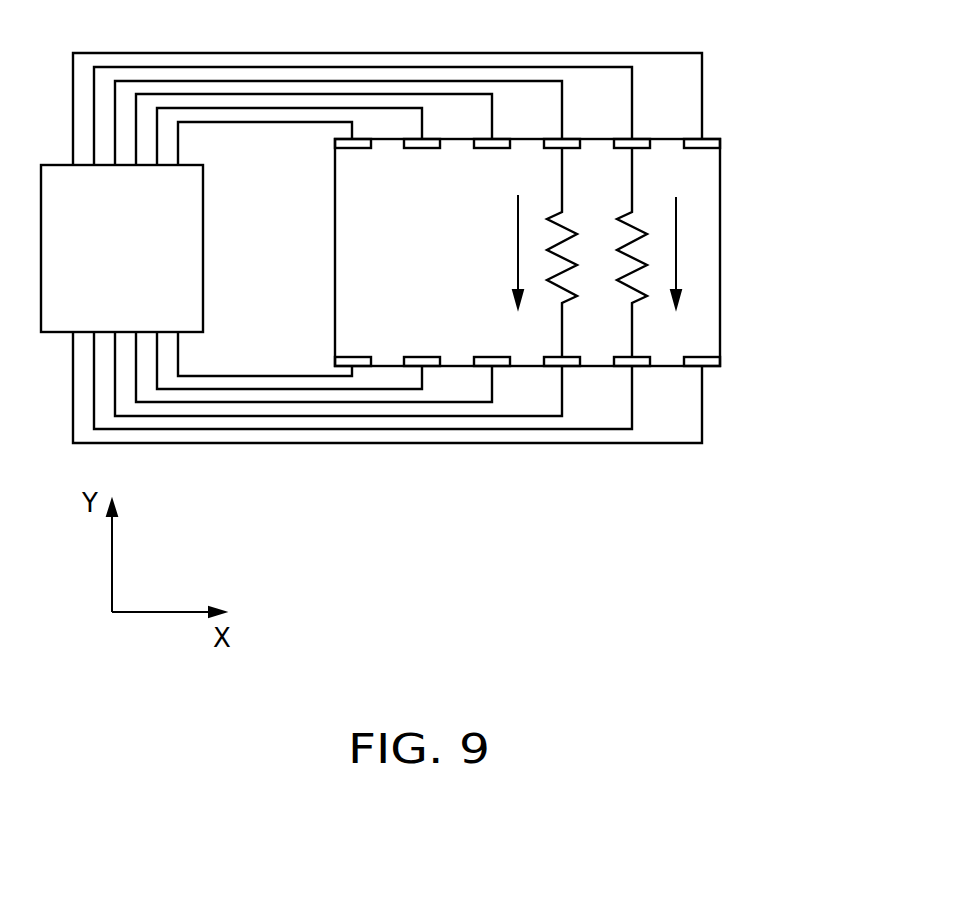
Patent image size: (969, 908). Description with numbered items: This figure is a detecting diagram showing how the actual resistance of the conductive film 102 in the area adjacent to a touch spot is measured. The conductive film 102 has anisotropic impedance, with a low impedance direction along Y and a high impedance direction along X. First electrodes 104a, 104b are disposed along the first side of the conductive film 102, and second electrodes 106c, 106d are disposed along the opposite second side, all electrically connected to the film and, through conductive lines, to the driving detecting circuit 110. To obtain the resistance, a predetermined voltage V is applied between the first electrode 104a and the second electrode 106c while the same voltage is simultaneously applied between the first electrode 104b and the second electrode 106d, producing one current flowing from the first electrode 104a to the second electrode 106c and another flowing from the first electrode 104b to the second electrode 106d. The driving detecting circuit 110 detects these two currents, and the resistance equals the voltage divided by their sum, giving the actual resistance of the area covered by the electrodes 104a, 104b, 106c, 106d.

The conductive film 102 is at (702, 203).
The first electrode 104a is at (555, 143).
The first electrode 104b is at (625, 143).
The second electrode 106c is at (553, 361).
The second electrode 106d is at (625, 363).
The driving detecting circuit 110 is at (172, 244).